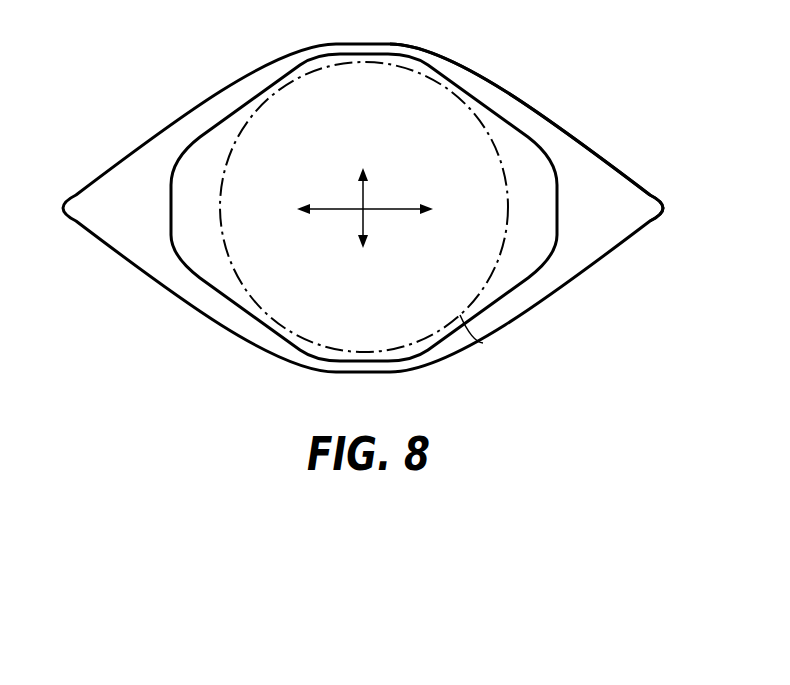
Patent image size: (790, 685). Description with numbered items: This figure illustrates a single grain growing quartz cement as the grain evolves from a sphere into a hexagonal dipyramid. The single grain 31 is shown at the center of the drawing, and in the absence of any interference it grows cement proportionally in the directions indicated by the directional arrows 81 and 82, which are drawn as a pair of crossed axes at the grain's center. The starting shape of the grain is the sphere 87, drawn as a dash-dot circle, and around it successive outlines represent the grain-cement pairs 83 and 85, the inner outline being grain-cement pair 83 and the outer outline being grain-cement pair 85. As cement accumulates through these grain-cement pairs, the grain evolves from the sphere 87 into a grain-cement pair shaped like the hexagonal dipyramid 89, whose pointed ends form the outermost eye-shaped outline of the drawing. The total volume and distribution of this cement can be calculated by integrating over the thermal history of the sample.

The single grain 31 is at (483, 343).
The directional arrow 81 is at (390, 210).
The directional arrow 82 is at (365, 194).
The grain-cement pair 83 is at (498, 302).
The grain-cement pair 85 is at (579, 277).
The sphere 87 is at (463, 118).
The hexagonal dipyramid 89 is at (600, 170).